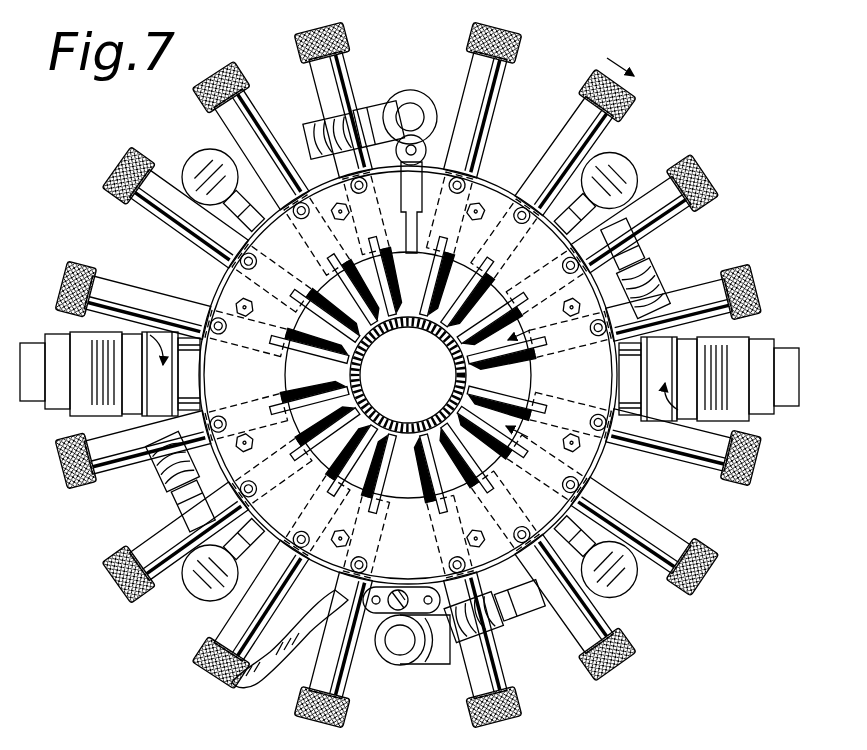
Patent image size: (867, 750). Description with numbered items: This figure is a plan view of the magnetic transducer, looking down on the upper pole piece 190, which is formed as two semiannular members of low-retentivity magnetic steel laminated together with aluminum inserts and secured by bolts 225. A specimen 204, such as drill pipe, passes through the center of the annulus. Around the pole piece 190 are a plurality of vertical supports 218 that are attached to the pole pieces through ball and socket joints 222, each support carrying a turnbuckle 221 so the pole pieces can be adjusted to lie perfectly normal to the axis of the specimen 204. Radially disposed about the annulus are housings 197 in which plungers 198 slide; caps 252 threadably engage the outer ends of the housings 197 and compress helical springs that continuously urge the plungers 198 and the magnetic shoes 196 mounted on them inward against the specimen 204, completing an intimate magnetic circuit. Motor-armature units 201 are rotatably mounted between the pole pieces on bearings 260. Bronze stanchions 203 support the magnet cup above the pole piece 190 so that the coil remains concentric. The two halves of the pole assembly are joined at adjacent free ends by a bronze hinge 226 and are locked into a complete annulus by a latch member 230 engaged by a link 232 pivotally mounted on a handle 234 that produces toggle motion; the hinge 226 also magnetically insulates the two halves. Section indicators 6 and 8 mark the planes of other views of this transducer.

The section line 6 is at (631, 66).
The section line 8 is at (523, 379).
The pole piece 190 is at (618, 502).
The magnetic shoe 196 is at (538, 345).
The housing 197 is at (575, 125).
The plunger 198 is at (292, 385).
The motor-armature unit 201 is at (150, 333).
The bronze stanchion 203 is at (362, 188).
The specimen 204 is at (452, 356).
The vertical support 218 is at (378, 112).
The turnbuckle 221 is at (302, 140).
The ball and socket joint 222 is at (207, 167).
The bolt 225 is at (245, 297).
The bronze hinge 226 is at (424, 168).
The latch member 230 is at (420, 645).
The link 232 is at (395, 645).
The handle 234 is at (258, 684).
The cap 252 is at (225, 78).
The bearing 260 is at (352, 392).